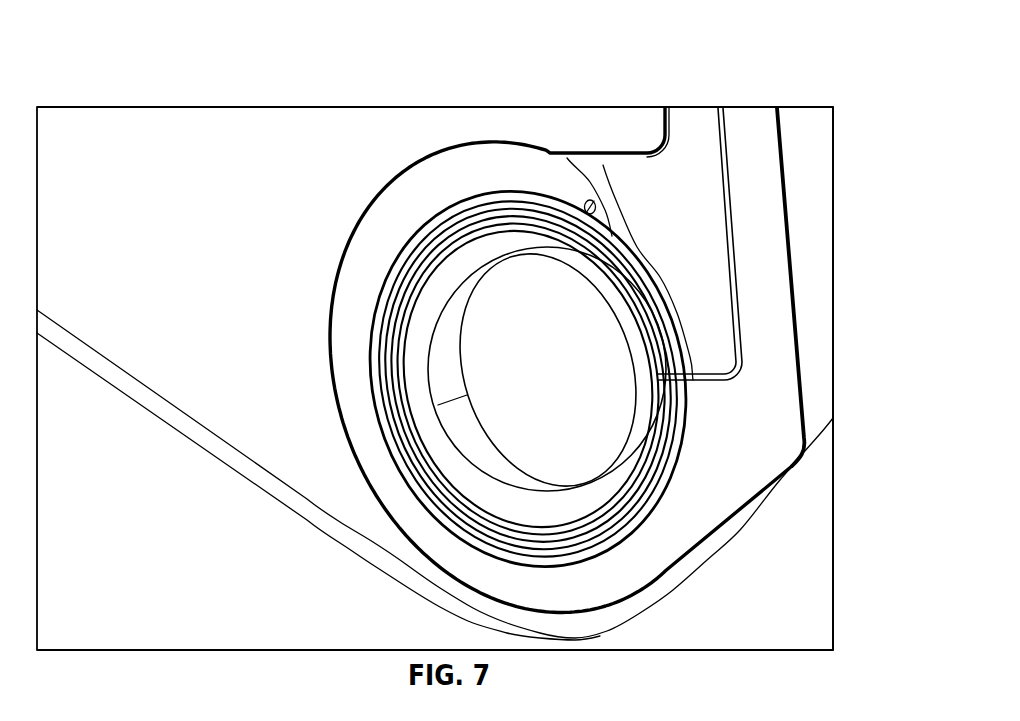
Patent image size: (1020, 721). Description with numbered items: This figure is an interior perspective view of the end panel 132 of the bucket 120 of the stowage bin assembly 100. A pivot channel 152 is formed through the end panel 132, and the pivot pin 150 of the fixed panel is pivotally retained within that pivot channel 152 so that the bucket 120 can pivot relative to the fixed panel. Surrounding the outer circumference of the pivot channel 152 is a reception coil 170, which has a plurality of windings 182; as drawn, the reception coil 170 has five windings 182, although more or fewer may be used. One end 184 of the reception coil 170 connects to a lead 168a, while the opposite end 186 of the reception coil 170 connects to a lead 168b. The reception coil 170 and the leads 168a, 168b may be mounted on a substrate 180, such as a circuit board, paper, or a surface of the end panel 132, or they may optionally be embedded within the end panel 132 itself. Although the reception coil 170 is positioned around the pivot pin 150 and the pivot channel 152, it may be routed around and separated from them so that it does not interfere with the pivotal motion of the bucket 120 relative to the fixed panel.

The stowage bin assembly 100 is at (133, 51).
The bucket 120 is at (388, 96).
The end panel 132 is at (822, 232).
The pivot pin 150 is at (527, 312).
The pivot channel 152 is at (492, 460).
The lead 168a is at (732, 197).
The lead 168b is at (716, 118).
The reception coil 170 is at (655, 500).
The substrate 180 is at (783, 143).
The windings 182 is at (567, 158).
The end of the reception coil 184 is at (693, 380).
The opposite end of the reception coil 186 is at (603, 165).